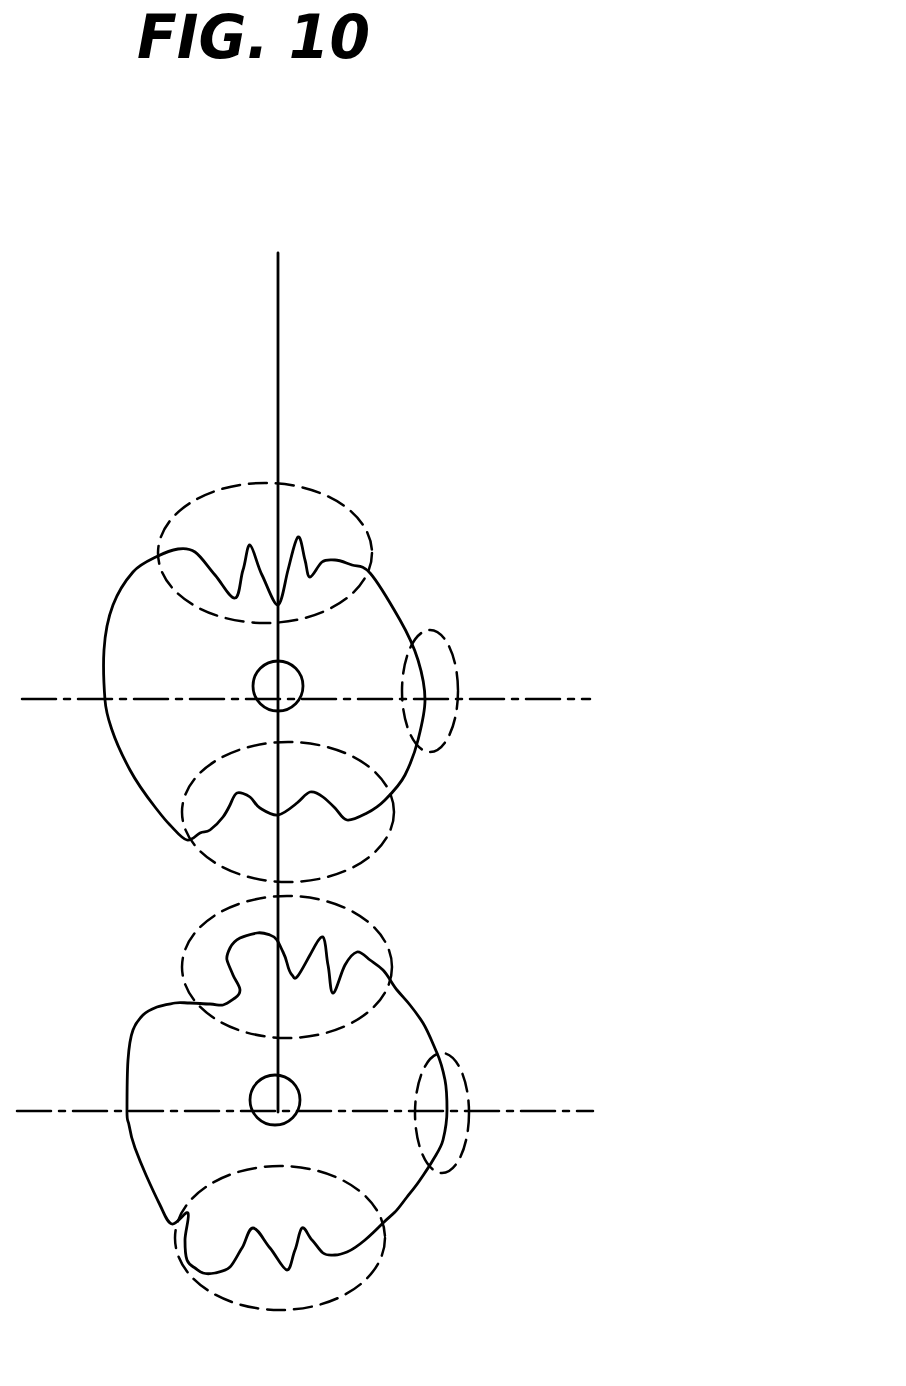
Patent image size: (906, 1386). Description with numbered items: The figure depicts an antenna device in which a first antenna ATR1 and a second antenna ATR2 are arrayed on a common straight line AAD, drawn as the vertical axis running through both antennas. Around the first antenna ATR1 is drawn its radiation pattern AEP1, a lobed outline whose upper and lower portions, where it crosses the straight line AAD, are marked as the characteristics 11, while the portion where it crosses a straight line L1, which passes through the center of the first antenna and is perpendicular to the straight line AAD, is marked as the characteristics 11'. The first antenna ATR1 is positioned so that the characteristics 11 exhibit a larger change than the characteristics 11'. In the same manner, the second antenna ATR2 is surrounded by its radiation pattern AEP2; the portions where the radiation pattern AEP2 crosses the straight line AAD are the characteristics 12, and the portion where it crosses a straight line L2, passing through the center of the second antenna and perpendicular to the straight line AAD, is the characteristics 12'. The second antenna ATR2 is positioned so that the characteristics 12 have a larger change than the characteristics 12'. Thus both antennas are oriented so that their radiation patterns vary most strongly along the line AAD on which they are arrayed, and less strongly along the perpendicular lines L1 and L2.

The straight line AAD is at (279, 368).
The characteristics of portion where radiation pattern crosses straight line AAD 11 is at (226, 656).
The characteristics of portion where radiation pattern crosses straight line L1 11' is at (460, 666).
The first antenna ATR1 is at (254, 681).
The straight line L1 is at (532, 698).
The radiation pattern of the first antenna AEP1 is at (413, 765).
The characteristics of portion where radiation pattern crosses straight line AAD 12 is at (236, 1103).
The characteristics of portion where radiation pattern crosses straight line L2 12' is at (473, 1089).
The second antenna ATR2 is at (251, 1093).
The straight line L2 is at (543, 1110).
The radiation pattern of the second antenna AEP2 is at (417, 1200).